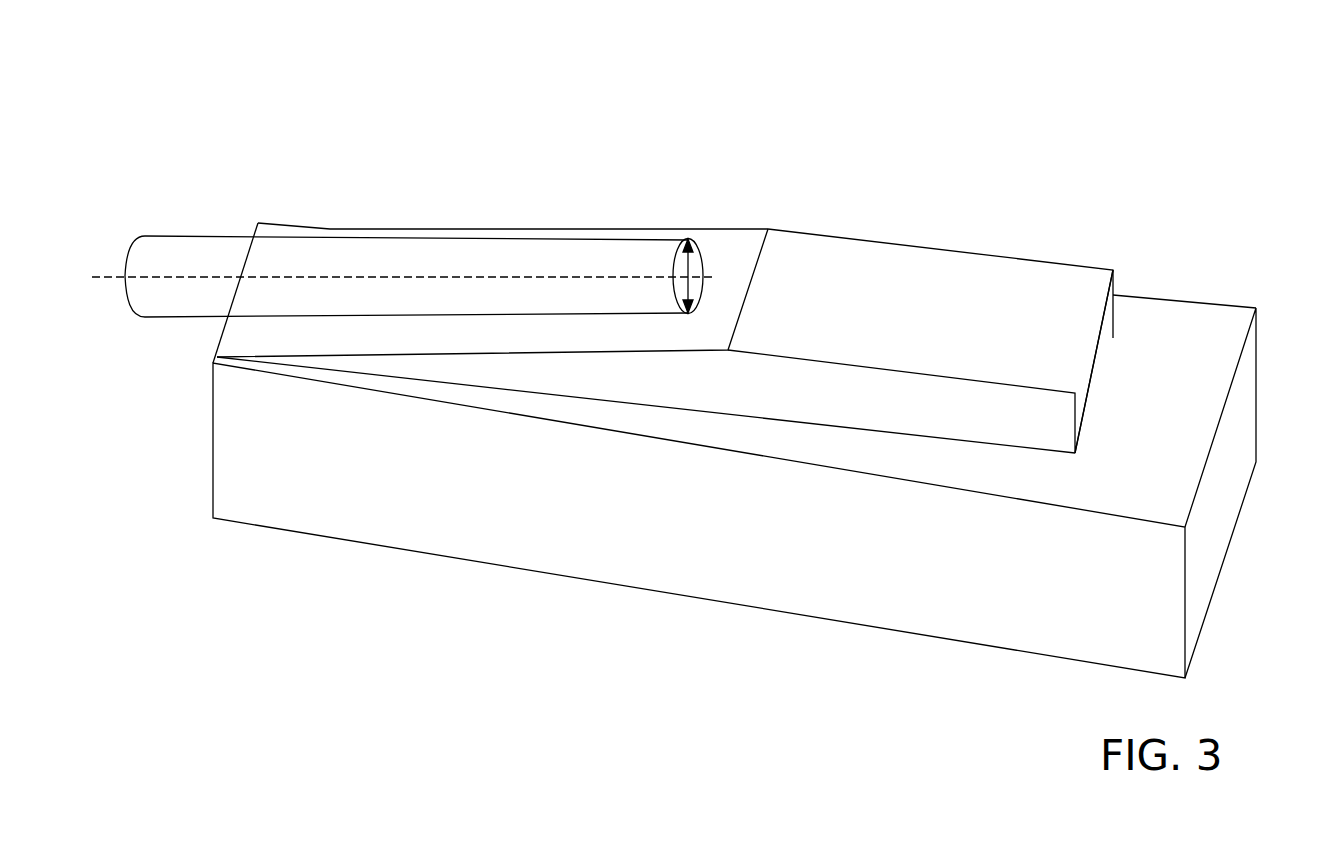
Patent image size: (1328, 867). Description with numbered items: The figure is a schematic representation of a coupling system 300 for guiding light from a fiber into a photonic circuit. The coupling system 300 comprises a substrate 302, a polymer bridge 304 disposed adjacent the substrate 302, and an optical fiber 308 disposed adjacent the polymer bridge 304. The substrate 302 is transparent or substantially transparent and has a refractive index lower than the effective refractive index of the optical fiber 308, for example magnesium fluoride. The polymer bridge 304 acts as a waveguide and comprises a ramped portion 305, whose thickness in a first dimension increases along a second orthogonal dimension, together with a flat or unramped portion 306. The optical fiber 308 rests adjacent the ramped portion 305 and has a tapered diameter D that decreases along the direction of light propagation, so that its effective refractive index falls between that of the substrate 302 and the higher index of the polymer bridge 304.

The coupling system 300 is at (212, 93).
The substrate 302 is at (1215, 508).
The polymer bridge 304 is at (1092, 352).
The ramped portion 305 is at (770, 210).
The unramped portion 306 is at (1117, 250).
The optical fiber 308 is at (183, 250).
The tapered diameter D is at (688, 265).